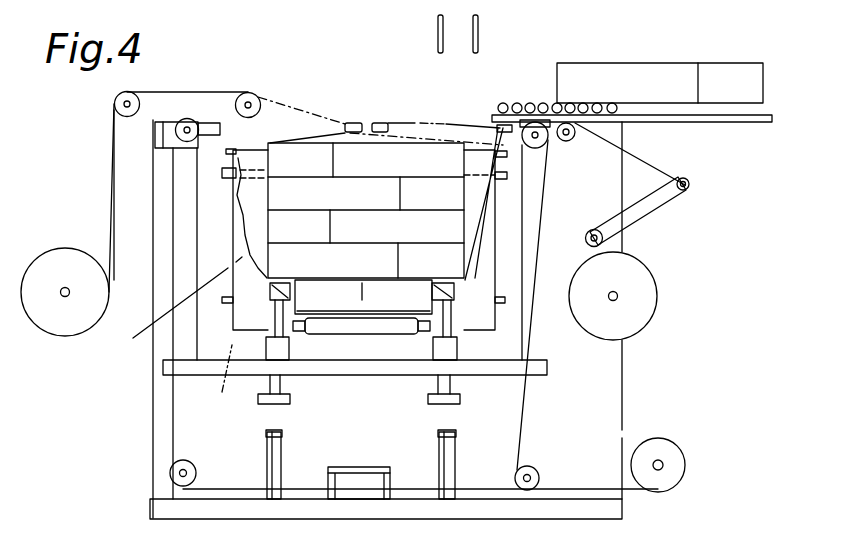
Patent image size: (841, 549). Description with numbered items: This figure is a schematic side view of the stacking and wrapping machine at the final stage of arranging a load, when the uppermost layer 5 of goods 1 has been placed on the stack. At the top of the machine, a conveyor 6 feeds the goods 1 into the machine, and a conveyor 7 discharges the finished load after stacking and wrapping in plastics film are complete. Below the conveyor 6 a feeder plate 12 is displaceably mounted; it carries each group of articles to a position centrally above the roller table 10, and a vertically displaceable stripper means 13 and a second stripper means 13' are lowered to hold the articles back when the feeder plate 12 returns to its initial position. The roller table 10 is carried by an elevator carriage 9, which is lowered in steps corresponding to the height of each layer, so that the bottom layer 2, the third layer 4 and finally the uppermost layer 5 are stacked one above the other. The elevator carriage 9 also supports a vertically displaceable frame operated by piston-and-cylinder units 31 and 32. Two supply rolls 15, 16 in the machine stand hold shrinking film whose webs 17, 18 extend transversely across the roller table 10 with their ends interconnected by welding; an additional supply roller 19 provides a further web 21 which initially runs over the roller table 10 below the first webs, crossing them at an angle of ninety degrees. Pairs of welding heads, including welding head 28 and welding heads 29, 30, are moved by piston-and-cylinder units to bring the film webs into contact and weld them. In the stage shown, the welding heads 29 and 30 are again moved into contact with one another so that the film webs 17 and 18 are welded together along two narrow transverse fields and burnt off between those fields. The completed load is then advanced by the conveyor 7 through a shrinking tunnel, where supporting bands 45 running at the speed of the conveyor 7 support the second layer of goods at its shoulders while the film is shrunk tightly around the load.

The goods 1 is at (710, 77).
The bottom layer 2 is at (334, 296).
The third layer 4 is at (285, 200).
The uppermost layer 5 is at (295, 158).
The conveyor 6 is at (529, 104).
The conveyor 7 is at (370, 468).
The elevator carriage 9 is at (492, 376).
The roller table 10 is at (400, 326).
The feeder plate 12 is at (723, 123).
The stripper means 13 is at (420, 31).
The second stripper means 13' is at (503, 31).
The supply roll 15 is at (75, 270).
The supply roll 16 is at (633, 291).
The film web 17 is at (112, 186).
The film web 18 is at (417, 122).
The additional supply roller 19 is at (228, 379).
The film web 21 is at (175, 310).
The welding head 28 is at (503, 176).
The welding head 29 is at (213, 122).
The welding head 30 is at (382, 122).
The piston-and-cylinder unit 31 is at (275, 315).
The piston-and-cylinder unit 32 is at (266, 348).
The supporting bands 45 is at (266, 437).